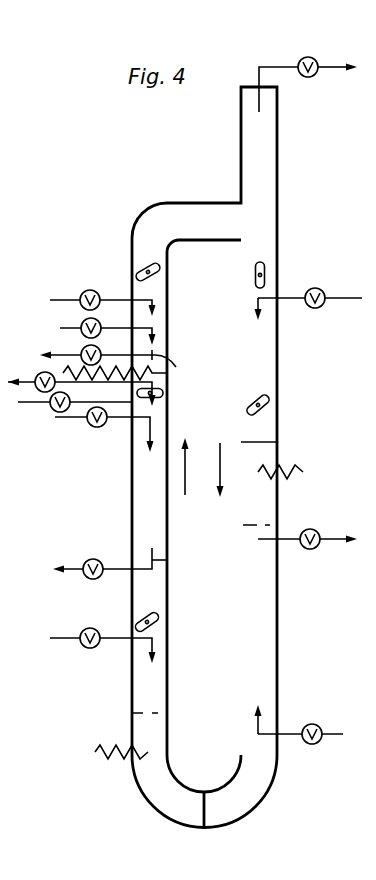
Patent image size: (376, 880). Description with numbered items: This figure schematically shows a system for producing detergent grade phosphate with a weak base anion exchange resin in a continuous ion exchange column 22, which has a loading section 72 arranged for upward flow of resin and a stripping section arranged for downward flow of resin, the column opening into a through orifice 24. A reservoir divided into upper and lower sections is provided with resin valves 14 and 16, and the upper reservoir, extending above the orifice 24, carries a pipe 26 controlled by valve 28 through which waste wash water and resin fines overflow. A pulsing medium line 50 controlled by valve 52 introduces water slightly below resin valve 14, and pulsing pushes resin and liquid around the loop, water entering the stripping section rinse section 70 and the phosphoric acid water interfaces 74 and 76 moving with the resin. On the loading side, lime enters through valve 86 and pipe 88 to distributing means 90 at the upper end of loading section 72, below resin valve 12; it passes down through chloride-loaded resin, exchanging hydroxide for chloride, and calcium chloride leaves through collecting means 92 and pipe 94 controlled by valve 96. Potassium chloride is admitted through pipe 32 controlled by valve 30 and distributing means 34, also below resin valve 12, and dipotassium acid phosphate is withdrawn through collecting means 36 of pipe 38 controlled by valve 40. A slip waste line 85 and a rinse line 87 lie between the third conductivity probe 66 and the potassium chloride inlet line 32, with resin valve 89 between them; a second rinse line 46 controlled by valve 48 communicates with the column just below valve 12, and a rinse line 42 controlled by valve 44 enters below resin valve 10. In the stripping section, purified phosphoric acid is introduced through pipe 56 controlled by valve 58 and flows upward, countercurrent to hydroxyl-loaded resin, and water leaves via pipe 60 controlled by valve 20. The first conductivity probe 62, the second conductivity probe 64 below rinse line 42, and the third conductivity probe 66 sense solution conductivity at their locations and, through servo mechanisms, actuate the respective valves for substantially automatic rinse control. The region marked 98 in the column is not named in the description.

The resin valve 10 is at (157, 615).
The resin valve 12 is at (160, 267).
The resin valve 14 is at (265, 262).
The resin valve 16 is at (266, 398).
The valve 20 is at (310, 549).
The continuous ion exchange column 22 is at (156, 197).
The through orifice 24 is at (258, 233).
The pipe 26 is at (279, 67).
The valve 28 is at (315, 60).
The valve 30 is at (90, 421).
The potassium chloride inlet pipe 32 is at (120, 418).
The distributing means 34 is at (167, 432).
The collecting means 36 is at (167, 560).
The pipe 38 is at (60, 566).
The valve 40 is at (105, 558).
The rinse line 42 is at (72, 621).
The valve 44 is at (97, 630).
The second rinse line 46 is at (114, 300).
The valve 48 is at (83, 293).
The pulsing medium line 50 is at (361, 300).
The valve 52 is at (323, 291).
The pipe 56 is at (343, 734).
The valve 58 is at (325, 716).
The pipe 60 is at (320, 531).
The first conductivity probe 62 is at (303, 472).
The second conductivity probe 64 is at (100, 742).
The third conductivity probe 66 is at (63, 373).
The stripping section rinse section 70 is at (143, 783).
The loading section 72 is at (153, 320).
The phosphoric acid water interface 74 is at (277, 442).
The phosphoric acid water interface 76 is at (140, 713).
The slip waste line 85 is at (73, 384).
The valve 86 is at (108, 325).
The rinse line 87 is at (20, 402).
The pipe 88 is at (81, 324).
The resin valve 89 is at (165, 390).
The distributing means 90 is at (158, 345).
The collecting means 92 is at (180, 367).
The pipe 94 is at (62, 341).
The valve 96 is at (97, 345).
The downcomer zone 98 is at (265, 630).